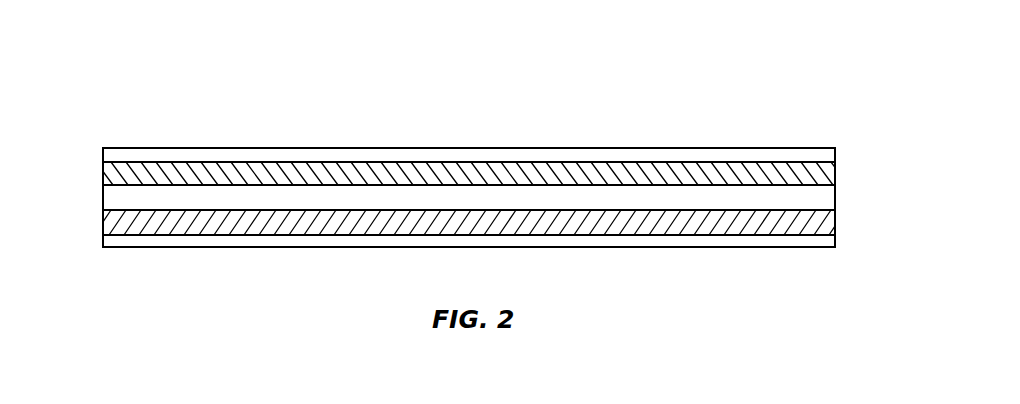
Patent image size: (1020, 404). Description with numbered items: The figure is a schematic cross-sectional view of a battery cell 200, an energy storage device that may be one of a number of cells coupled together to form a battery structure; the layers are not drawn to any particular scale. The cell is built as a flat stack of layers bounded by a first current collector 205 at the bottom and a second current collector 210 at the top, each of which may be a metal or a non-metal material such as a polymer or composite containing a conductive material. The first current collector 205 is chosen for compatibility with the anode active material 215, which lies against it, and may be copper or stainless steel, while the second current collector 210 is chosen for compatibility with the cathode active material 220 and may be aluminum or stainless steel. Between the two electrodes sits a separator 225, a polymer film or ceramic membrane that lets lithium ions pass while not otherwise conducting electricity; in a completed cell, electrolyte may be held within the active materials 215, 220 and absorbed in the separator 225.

The battery cell 200 is at (471, 171).
The first current collector 205 is at (305, 248).
The second current collector 210 is at (688, 148).
The anode active material 215 is at (103, 218).
The cathode active material 220 is at (836, 168).
The separator 225 is at (836, 206).